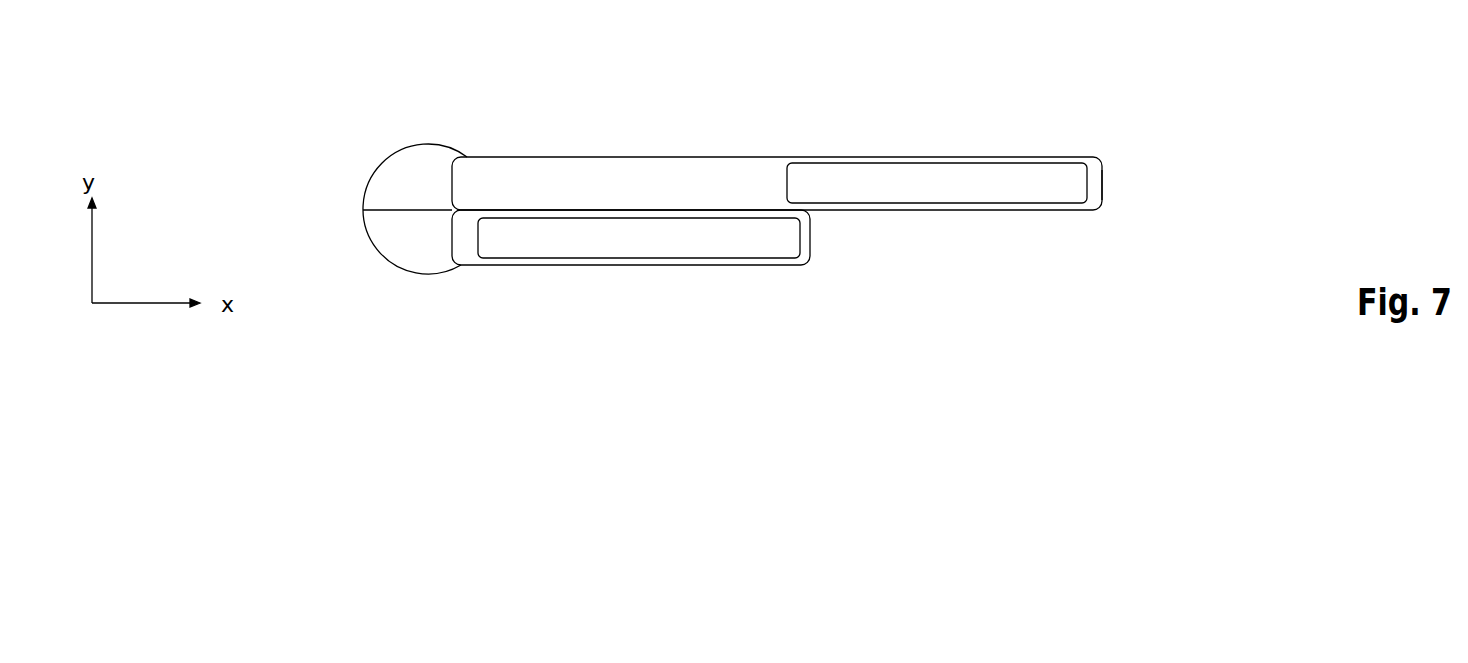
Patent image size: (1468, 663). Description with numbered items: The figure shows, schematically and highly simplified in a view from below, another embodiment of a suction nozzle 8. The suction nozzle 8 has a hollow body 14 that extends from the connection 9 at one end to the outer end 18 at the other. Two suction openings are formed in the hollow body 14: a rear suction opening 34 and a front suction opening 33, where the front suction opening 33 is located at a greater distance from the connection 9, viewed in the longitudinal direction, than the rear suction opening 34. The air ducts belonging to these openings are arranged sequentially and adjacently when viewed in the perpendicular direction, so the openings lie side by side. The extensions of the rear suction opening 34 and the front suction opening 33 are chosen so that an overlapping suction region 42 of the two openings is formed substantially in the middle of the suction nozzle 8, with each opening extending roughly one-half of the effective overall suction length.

The suction nozzle 8 is at (1138, 118).
The connection 9 is at (367, 187).
The hollow body 14 is at (656, 157).
The overlapping suction region 42 is at (783, 158).
The outer end 18 is at (1108, 192).
The front suction opening 33 is at (990, 204).
The rear suction opening 34 is at (582, 262).